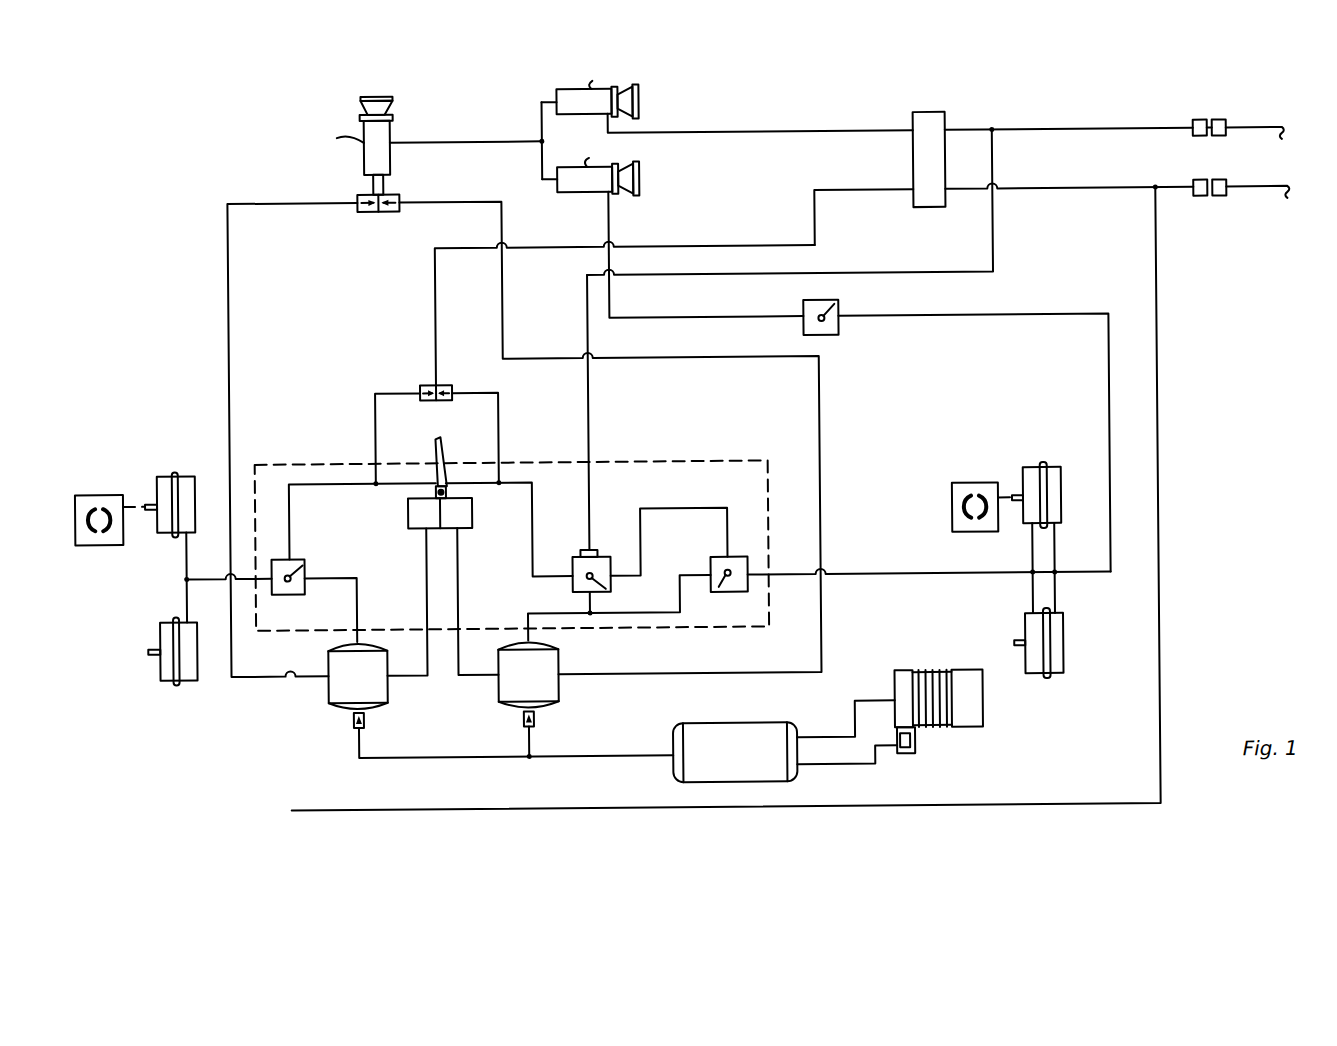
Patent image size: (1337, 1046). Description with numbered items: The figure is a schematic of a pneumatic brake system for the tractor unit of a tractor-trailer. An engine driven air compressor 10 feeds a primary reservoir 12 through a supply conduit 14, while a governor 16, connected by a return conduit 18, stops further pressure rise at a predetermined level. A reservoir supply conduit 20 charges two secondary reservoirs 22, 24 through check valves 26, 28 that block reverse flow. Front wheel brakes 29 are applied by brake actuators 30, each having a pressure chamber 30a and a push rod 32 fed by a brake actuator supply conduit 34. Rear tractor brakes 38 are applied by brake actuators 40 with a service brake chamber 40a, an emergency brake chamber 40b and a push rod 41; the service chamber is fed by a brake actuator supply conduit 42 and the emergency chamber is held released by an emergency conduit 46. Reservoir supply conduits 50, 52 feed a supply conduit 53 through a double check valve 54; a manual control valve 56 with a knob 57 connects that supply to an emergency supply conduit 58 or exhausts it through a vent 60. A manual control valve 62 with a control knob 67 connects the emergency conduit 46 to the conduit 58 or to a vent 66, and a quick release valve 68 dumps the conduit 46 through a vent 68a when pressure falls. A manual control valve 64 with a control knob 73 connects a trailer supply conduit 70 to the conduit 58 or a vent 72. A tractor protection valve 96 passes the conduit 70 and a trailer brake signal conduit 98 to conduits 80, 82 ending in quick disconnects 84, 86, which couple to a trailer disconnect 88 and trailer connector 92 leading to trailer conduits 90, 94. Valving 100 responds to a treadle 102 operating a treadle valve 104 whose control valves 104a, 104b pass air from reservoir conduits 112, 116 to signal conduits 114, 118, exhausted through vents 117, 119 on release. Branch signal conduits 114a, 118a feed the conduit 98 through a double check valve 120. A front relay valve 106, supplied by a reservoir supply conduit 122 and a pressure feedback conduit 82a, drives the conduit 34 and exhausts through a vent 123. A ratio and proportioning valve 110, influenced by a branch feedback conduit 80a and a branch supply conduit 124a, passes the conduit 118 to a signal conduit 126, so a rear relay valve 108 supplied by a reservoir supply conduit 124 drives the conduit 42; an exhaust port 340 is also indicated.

The air compressor 10 is at (978, 720).
The primary reservoir 12 is at (735, 740).
The supply conduit 14 is at (862, 700).
The governor 16 is at (913, 748).
The return conduit 18 is at (835, 767).
The reservoir supply conduit 20 is at (600, 757).
The secondary reservoir 22 is at (383, 687).
The secondary reservoir 24 is at (553, 687).
The check valve 26 is at (362, 722).
The check valve 28 is at (532, 722).
The front wheel brakes 29 is at (100, 490).
The brake actuator 30 is at (170, 464).
The pressure chamber 30a is at (180, 468).
The push rod 32 is at (152, 506).
The brake actuator supply conduit 34 is at (186, 576).
The rear tractor brakes 38 is at (952, 510).
The brake actuator 40 is at (1044, 460).
The service brake chamber 40a is at (1023, 478).
The emergency brake chamber 40b is at (1061, 482).
The push rod 41 is at (1020, 503).
The brake actuator supply conduit 42 is at (915, 575).
The emergency conduit 46 is at (665, 317).
The reservoir supply conduit 50 is at (230, 280).
The reservoir supply conduit 52 is at (504, 292).
The supply conduit 53 is at (376, 182).
The double check valve 54 is at (381, 209).
The manual control valve 56 is at (395, 130).
The knob 57 is at (386, 95).
The emergency supply conduit 58 is at (445, 142).
The vent 60 is at (340, 135).
The manual control valve 62 is at (590, 193).
The manual control valve 64 is at (605, 88).
The vent 66 is at (590, 162).
The control knob 67 is at (643, 178).
The quick release valve 68 is at (838, 336).
The vent 68a is at (838, 306).
The trailer supply conduit 70 is at (800, 132).
The vent 72 is at (592, 84).
The control knob 73 is at (642, 92).
The conduit 80 is at (1025, 132).
The branch feedback conduit 80a is at (995, 250).
The conduit 82 is at (1090, 193).
The pressure feedback conduit 82a is at (690, 808).
The quick disconnect 84 is at (1203, 124).
The quick disconnect 86 is at (1203, 200).
The trailer disconnect 88 is at (1222, 124).
The trailer conduit 90 is at (1262, 132).
The trailer connector 92 is at (1222, 200).
The trailer carried conduit 94 is at (1270, 191).
The tractor protection valve 96 is at (925, 120).
The trailer brake signal conduit 98 is at (437, 292).
The valving 100 is at (258, 458).
The treadle 102 is at (437, 455).
The treadle valve 104 is at (449, 478).
The control valve 104a is at (420, 528).
The control valve 104b is at (465, 528).
The front relay valve 106 is at (293, 556).
The rear relay valve 108 is at (740, 557).
The ratio and proportioning valve 110 is at (597, 556).
The reservoir conduit 112 is at (426, 613).
The signal conduit 114 is at (340, 478).
The branch signal conduit 114a is at (376, 420).
The reservoir conduit 116 is at (457, 606).
The vent 117 is at (408, 505).
The signal conduit 118 is at (528, 481).
The branch signal conduit 118a is at (499, 450).
The vent 119 is at (472, 505).
The double check valve 120 is at (437, 383).
The reservoir supply conduit 122 is at (356, 600).
The vent 123 is at (304, 563).
The reservoir supply conduit 124 is at (640, 616).
The branch supply conduit 124a is at (572, 610).
The signal conduit 126 is at (668, 508).
The exhaust port 340 is at (612, 589).